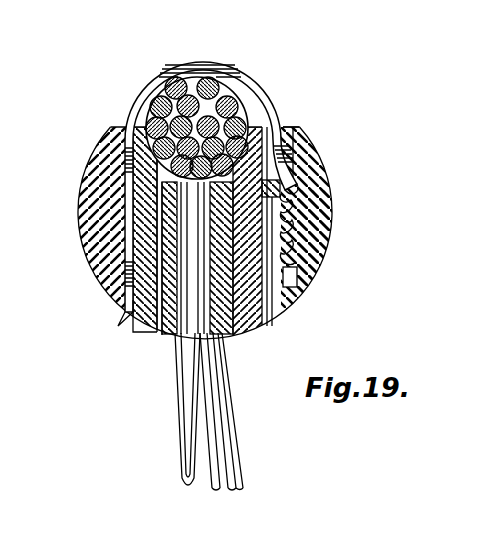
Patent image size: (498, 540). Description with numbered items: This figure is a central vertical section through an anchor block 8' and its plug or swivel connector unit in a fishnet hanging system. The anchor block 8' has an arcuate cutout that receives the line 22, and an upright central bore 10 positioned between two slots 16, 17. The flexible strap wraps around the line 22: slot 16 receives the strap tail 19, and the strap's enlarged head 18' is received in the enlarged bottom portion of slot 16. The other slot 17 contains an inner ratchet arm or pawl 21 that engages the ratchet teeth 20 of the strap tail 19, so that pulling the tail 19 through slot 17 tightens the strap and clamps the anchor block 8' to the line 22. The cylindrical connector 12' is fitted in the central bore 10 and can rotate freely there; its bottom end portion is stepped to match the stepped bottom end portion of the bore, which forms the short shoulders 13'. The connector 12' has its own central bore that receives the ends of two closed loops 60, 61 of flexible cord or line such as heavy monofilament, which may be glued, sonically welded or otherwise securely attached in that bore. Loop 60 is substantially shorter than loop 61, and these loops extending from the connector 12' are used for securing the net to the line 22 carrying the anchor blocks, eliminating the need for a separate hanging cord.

The upright central bore 10 is at (156, 200).
The connector 12' is at (244, 273).
The short shoulders 13' is at (129, 345).
The slot 16 is at (123, 318).
The slot 17 is at (270, 303).
The enlarged head 18' is at (86, 227).
The strap tail 19 is at (278, 132).
The ratchet teeth 20 is at (304, 262).
The inner ratchet arm or pawl 21 is at (300, 192).
The line 22 is at (190, 78).
The anchor block 8' is at (320, 146).
The loop 60 is at (178, 451).
The loop 61 is at (217, 458).